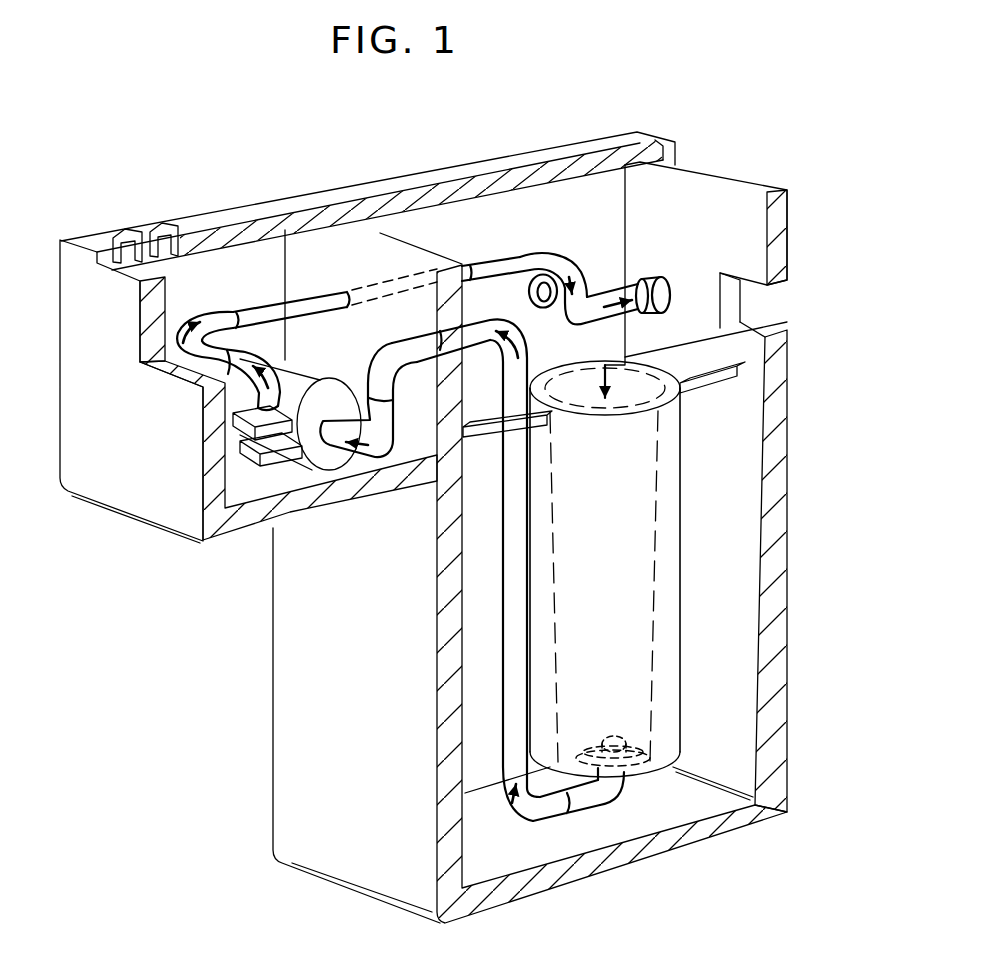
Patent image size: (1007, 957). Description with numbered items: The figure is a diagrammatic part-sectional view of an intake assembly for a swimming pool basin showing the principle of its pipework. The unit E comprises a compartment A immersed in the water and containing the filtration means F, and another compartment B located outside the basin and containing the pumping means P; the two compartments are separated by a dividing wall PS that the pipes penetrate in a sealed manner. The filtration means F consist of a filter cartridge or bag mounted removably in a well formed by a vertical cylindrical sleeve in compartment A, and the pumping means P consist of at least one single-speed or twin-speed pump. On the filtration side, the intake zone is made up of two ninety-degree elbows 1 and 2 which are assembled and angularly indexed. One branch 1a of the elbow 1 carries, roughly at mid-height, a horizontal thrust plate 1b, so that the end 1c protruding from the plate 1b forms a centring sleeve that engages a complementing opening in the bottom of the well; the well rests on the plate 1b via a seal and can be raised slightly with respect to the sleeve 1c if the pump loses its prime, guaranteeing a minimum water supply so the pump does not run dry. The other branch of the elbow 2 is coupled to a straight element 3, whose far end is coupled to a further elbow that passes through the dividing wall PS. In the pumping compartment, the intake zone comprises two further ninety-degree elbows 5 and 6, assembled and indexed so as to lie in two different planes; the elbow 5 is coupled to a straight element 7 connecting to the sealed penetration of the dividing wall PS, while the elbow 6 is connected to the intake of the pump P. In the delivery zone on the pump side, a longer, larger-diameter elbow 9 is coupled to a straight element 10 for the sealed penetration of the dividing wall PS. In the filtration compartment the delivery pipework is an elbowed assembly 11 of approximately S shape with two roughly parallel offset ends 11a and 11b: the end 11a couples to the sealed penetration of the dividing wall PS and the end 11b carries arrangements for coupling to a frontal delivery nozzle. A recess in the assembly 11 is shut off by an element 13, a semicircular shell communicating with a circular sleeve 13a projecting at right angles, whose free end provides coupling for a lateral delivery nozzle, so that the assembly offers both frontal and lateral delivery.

The 90° elbow 1 is at (604, 808).
The branch of the elbow 1a is at (625, 785).
The horizontal thrust plate 1b is at (682, 754).
The centring sleeve 1c is at (640, 745).
The 90° elbow 2 is at (537, 820).
The straight element 3 is at (513, 547).
The 90° elbow 5 is at (378, 373).
The 90° elbow 6 is at (383, 457).
The straight element 7 is at (433, 341).
The 90° elbow 9 is at (219, 318).
The straight element 10 is at (316, 302).
The elbowed assembly 11 is at (592, 334).
The end of the elbowed assembly 11a is at (540, 254).
The end of the elbowed assembly 11b is at (660, 277).
The shutting-off element 13 is at (524, 296).
The circular sleeve 13a is at (522, 290).
The compartment A is at (743, 642).
The compartment B is at (278, 478).
The unit E is at (183, 552).
The filtration means F is at (667, 500).
The pumping means P is at (325, 457).
The dividing wall PS is at (357, 262).